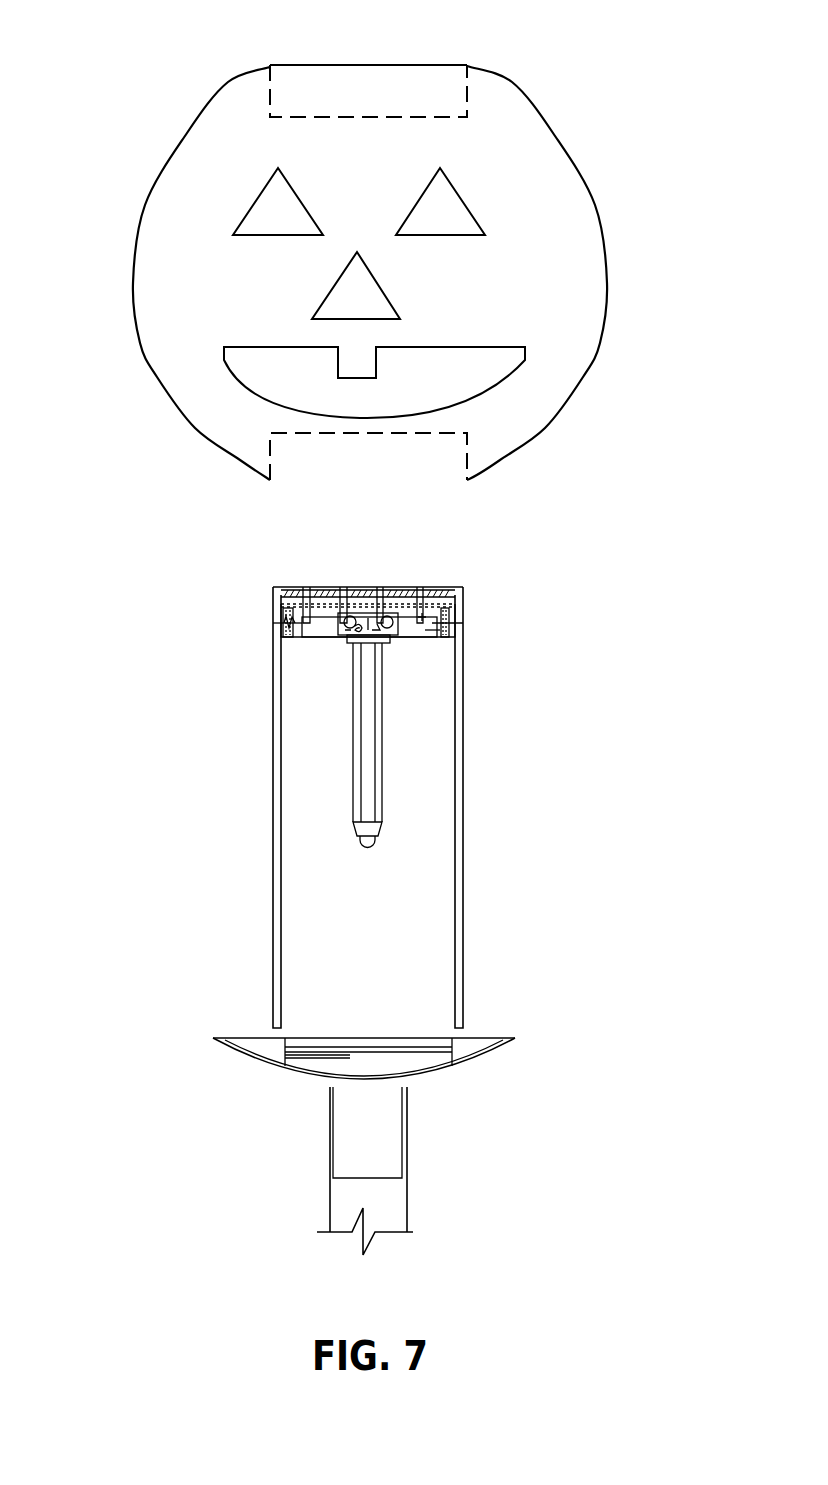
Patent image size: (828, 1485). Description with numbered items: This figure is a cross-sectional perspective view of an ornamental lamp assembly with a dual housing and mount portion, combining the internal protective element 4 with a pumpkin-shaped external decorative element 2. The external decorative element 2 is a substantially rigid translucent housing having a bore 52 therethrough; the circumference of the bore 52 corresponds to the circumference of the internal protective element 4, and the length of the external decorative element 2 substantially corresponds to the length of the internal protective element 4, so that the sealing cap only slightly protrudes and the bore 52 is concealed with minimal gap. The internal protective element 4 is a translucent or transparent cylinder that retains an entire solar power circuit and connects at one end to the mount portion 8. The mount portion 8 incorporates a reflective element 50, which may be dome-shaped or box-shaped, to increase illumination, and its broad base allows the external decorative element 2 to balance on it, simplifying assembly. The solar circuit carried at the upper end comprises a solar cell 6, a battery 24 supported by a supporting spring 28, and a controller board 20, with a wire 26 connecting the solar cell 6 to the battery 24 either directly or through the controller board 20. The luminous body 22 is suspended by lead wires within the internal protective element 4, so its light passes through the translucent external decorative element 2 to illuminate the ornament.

The external decorative housing element 2 is at (572, 168).
The internal protective housing element 4 is at (445, 718).
The solar cell 6 is at (403, 592).
The mount portion 8 is at (393, 1207).
The controller board 20 is at (342, 640).
The luminous body 22 is at (370, 842).
The battery 24 is at (432, 630).
The wire 26 is at (333, 623).
The supporting spring 28 is at (285, 622).
The reflective element 50 is at (423, 1070).
The bore 52 is at (417, 78).